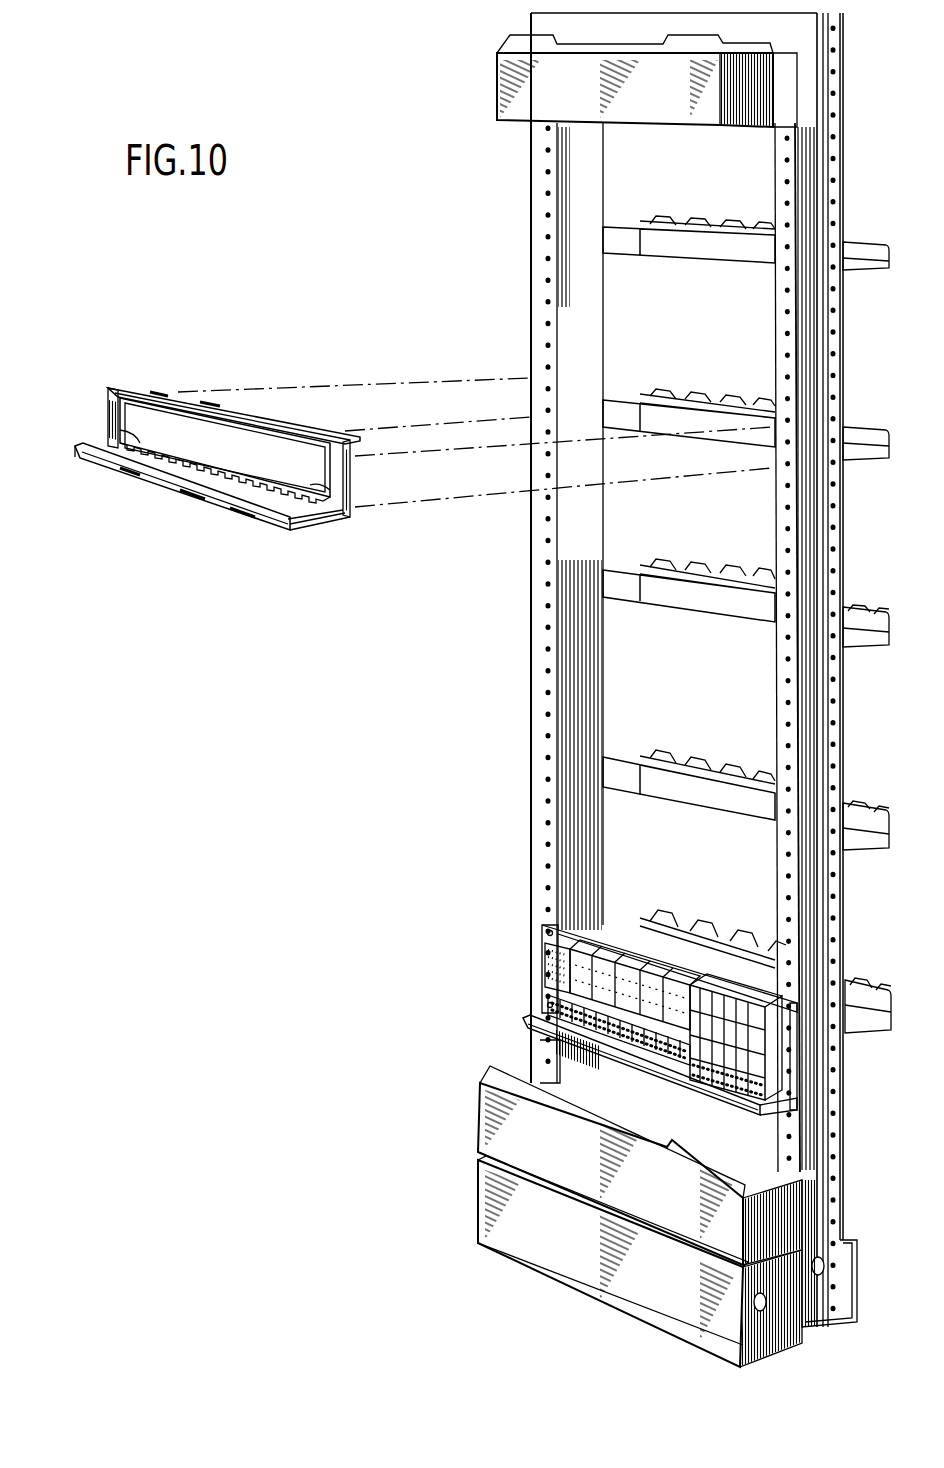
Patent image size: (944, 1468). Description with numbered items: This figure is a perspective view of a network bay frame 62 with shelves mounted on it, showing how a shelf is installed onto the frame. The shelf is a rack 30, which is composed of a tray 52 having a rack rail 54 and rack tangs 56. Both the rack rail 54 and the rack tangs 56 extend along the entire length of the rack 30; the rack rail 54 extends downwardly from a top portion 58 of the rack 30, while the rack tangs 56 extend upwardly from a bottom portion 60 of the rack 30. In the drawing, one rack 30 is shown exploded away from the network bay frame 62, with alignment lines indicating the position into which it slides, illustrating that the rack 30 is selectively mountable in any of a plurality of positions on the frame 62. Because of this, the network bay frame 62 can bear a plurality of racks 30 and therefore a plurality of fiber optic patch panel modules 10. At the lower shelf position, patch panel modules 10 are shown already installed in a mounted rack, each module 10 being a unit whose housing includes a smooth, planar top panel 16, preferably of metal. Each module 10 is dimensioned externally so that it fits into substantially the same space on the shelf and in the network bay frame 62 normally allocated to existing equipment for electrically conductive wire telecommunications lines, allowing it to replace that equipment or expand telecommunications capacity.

The fiber optic patch panel module 10 is at (565, 930).
The top panel 16 is at (577, 970).
The rack 30 is at (177, 390).
The tray 52 is at (183, 500).
The rack rail 54 is at (250, 438).
The rack tangs 56 is at (108, 422).
The top portion 58 is at (297, 418).
The bottom portion 60 is at (308, 520).
The network bay frame 62 is at (532, 770).